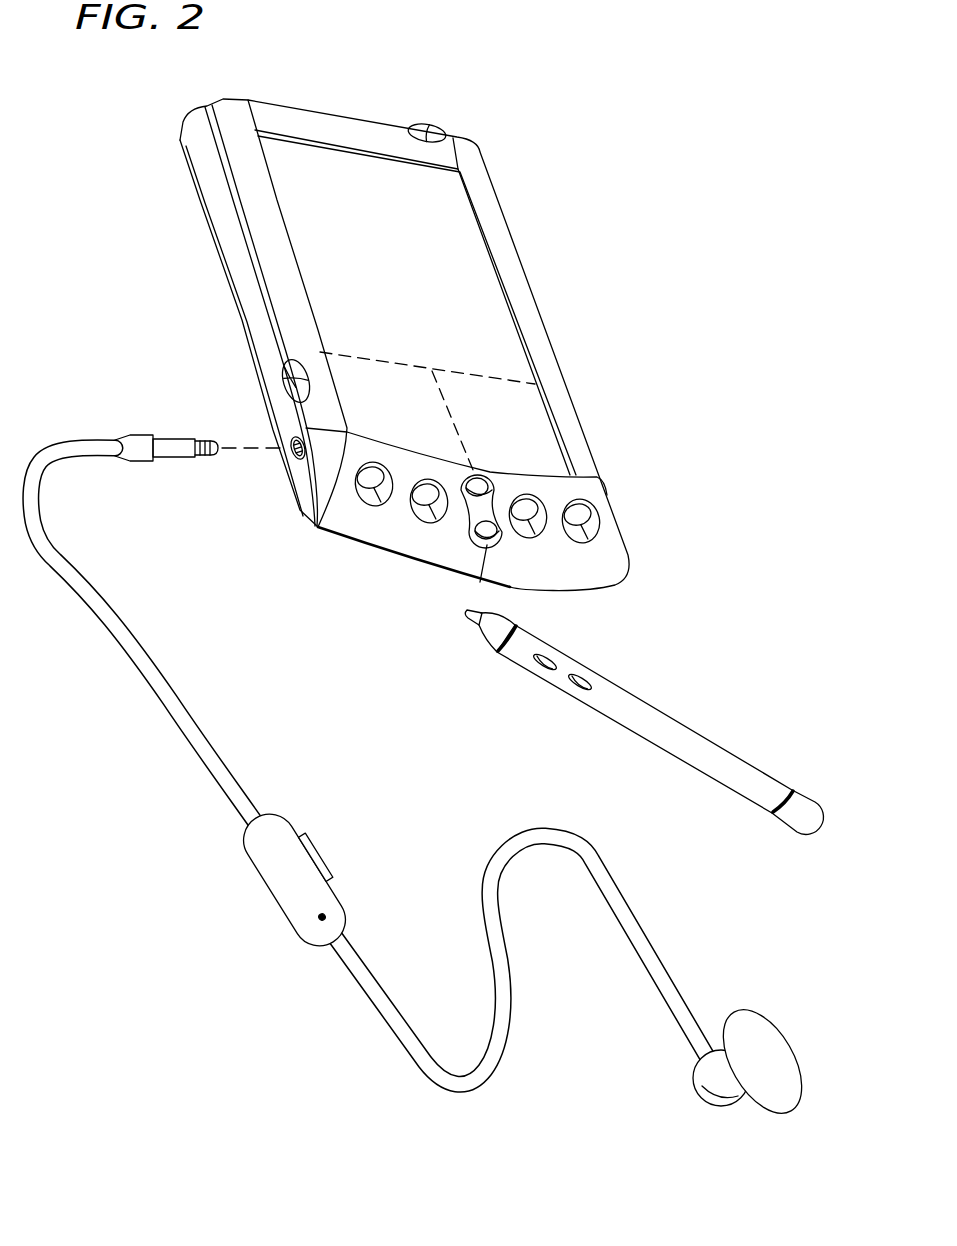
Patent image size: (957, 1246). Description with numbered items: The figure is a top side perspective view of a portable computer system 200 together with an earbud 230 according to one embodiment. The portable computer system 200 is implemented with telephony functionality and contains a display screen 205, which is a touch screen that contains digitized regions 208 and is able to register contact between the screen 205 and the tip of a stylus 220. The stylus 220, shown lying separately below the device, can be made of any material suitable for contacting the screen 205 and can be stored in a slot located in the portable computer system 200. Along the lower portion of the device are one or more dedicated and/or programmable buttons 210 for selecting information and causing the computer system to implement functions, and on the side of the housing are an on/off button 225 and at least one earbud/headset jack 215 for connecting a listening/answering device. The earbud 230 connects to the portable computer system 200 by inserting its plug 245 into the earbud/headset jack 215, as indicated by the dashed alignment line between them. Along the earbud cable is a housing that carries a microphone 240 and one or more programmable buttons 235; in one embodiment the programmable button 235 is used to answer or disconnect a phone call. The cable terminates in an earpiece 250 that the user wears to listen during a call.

The portable computer system 200 is at (436, 309).
The display screen 205 is at (440, 220).
The digitized regions 208 is at (530, 424).
The buttons 210 is at (590, 518).
The earbud/headset jack 215 is at (297, 458).
The stylus 220 is at (700, 742).
The on/off button 225 is at (290, 372).
The earbud 230 is at (487, 1075).
The programmable button 235 is at (322, 850).
The microphone 240 is at (315, 870).
The plug 245 is at (170, 437).
The earpiece 250 is at (773, 1034).